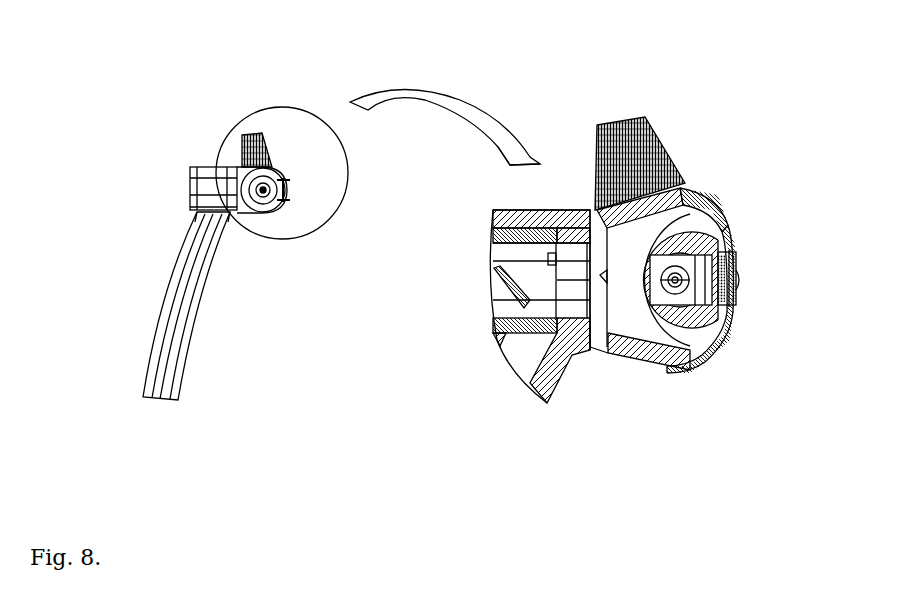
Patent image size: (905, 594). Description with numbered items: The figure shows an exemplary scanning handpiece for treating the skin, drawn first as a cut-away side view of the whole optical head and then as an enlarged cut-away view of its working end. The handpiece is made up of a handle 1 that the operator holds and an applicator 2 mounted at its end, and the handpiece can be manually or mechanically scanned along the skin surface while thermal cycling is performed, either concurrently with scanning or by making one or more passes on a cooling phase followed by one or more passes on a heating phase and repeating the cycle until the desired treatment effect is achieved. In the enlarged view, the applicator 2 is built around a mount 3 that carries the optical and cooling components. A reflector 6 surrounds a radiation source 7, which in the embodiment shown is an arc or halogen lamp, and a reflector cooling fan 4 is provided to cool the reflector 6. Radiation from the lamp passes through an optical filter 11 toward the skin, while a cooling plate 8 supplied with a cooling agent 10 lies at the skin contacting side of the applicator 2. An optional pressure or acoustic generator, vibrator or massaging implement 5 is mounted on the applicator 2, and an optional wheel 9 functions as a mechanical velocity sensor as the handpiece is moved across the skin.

In FIG. 8a, the handle 1 is at (178, 400).
In FIG. 8a, the applicator 2 is at (227, 150).
In FIG. 8b, the mount 3 is at (620, 355).
In FIG. 8b, the reflector cooling fan 4 is at (490, 293).
In FIG. 8b, the pressure or acoustic generator, vibrator or massaging implement 5 is at (637, 163).
In FIG. 8b, the reflector 6 is at (640, 220).
In FIG. 8b, the radiation source 7 is at (712, 240).
In FIG. 8b, the cooling plate 8 is at (733, 263).
In FIG. 8b, the wheel 9 is at (733, 287).
In FIG. 8b, the cooling agent 10 is at (732, 312).
In FIG. 8b, the optical filter 11 is at (708, 322).